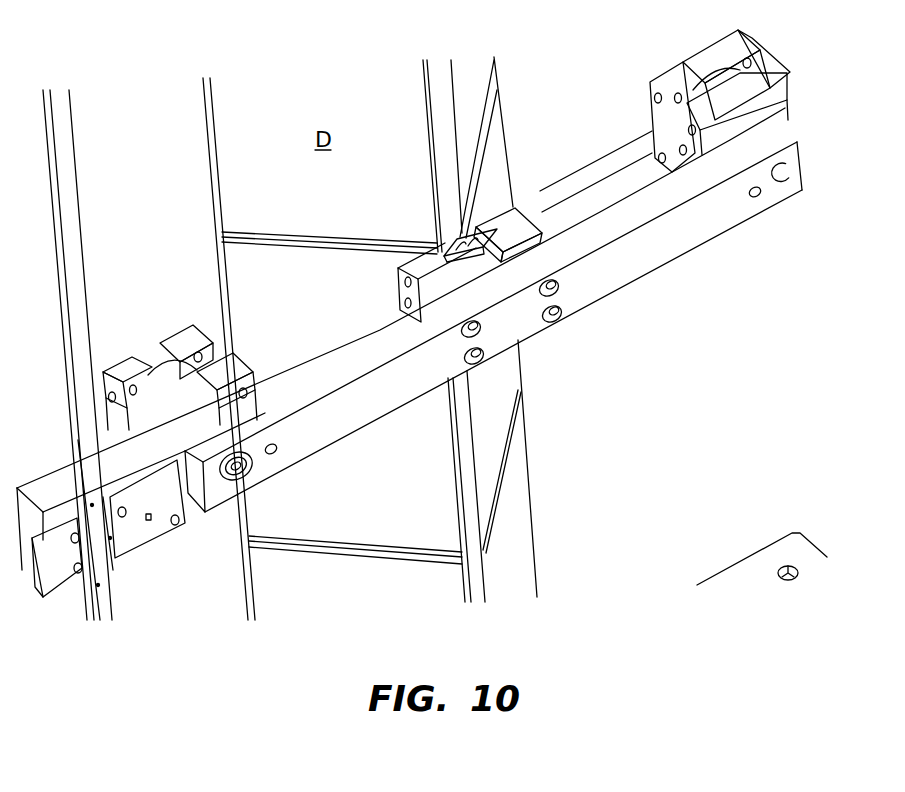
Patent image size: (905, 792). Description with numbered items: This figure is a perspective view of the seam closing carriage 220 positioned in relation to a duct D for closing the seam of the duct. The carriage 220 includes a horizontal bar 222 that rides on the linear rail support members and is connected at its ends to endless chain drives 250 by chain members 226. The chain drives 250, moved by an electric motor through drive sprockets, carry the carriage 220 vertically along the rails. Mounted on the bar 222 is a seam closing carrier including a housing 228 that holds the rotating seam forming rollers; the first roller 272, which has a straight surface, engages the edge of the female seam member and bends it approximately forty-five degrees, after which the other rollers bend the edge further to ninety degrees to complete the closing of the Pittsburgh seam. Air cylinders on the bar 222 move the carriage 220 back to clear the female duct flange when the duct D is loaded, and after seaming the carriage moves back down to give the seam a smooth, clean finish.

The seam closing carriage 220 is at (578, 344).
The horizontal bar 222 is at (328, 420).
The chain members 226 is at (53, 570).
The housing 228 is at (518, 216).
The endless chain drives 250 is at (71, 212).
The first roller 272 is at (461, 233).